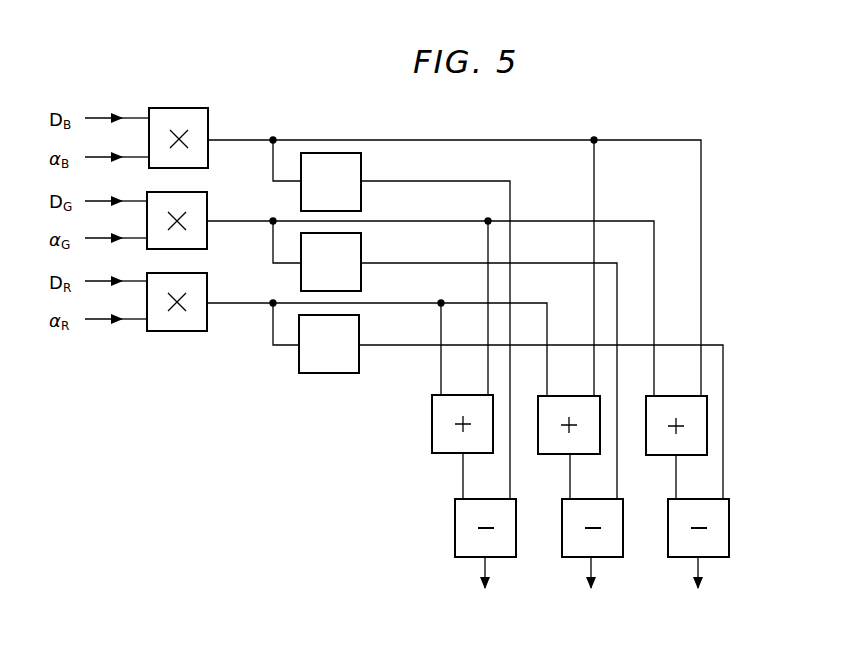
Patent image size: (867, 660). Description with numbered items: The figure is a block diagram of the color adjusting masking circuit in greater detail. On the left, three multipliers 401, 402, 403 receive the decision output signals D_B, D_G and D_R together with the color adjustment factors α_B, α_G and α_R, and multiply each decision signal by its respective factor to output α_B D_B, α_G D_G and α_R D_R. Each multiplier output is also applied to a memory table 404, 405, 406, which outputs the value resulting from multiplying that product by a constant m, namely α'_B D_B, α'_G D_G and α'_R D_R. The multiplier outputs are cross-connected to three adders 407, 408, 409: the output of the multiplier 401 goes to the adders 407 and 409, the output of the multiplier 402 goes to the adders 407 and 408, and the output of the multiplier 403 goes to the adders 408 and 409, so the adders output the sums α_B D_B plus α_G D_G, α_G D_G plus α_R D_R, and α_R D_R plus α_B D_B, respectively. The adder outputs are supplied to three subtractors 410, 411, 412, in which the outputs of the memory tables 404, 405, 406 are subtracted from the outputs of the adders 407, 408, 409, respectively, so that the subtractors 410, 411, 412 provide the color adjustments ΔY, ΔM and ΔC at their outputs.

The multiplier 401 is at (208, 113).
The multiplier 402 is at (207, 197).
The multiplier 403 is at (207, 278).
The memory table 404 is at (361, 199).
The memory table 405 is at (361, 280).
The memory table 406 is at (359, 362).
The adder 407 is at (432, 434).
The adder 408 is at (538, 435).
The adder 409 is at (646, 436).
The subtractor 410 is at (455, 531).
The subtractor 411 is at (562, 531).
The subtractor 412 is at (668, 531).